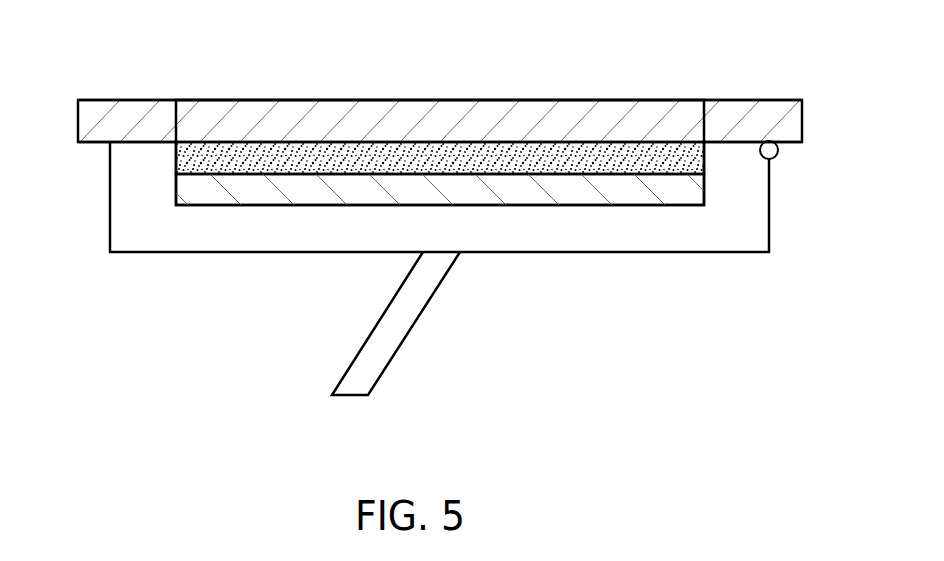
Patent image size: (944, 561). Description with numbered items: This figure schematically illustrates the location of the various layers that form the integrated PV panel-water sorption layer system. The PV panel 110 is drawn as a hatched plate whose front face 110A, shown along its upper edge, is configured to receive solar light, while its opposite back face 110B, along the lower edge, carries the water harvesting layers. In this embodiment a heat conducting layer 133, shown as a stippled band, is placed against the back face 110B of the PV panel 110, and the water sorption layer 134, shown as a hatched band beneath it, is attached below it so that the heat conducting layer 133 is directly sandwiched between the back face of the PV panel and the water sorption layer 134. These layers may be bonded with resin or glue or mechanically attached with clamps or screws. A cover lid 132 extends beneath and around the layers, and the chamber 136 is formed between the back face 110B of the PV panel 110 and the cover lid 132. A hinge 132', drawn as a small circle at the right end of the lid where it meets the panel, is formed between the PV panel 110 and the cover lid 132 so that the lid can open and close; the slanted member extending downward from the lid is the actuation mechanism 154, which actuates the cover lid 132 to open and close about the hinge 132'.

The PV panel 110 is at (663, 74).
The front face 110A is at (393, 95).
The back face 110B is at (147, 145).
The cover lid 132 is at (439, 235).
The hinge 132' is at (817, 158).
The heat conducting layer 133 is at (565, 165).
The water sorption layer 134 is at (257, 187).
The chamber 136 is at (648, 215).
The actuation mechanism 154 is at (373, 363).